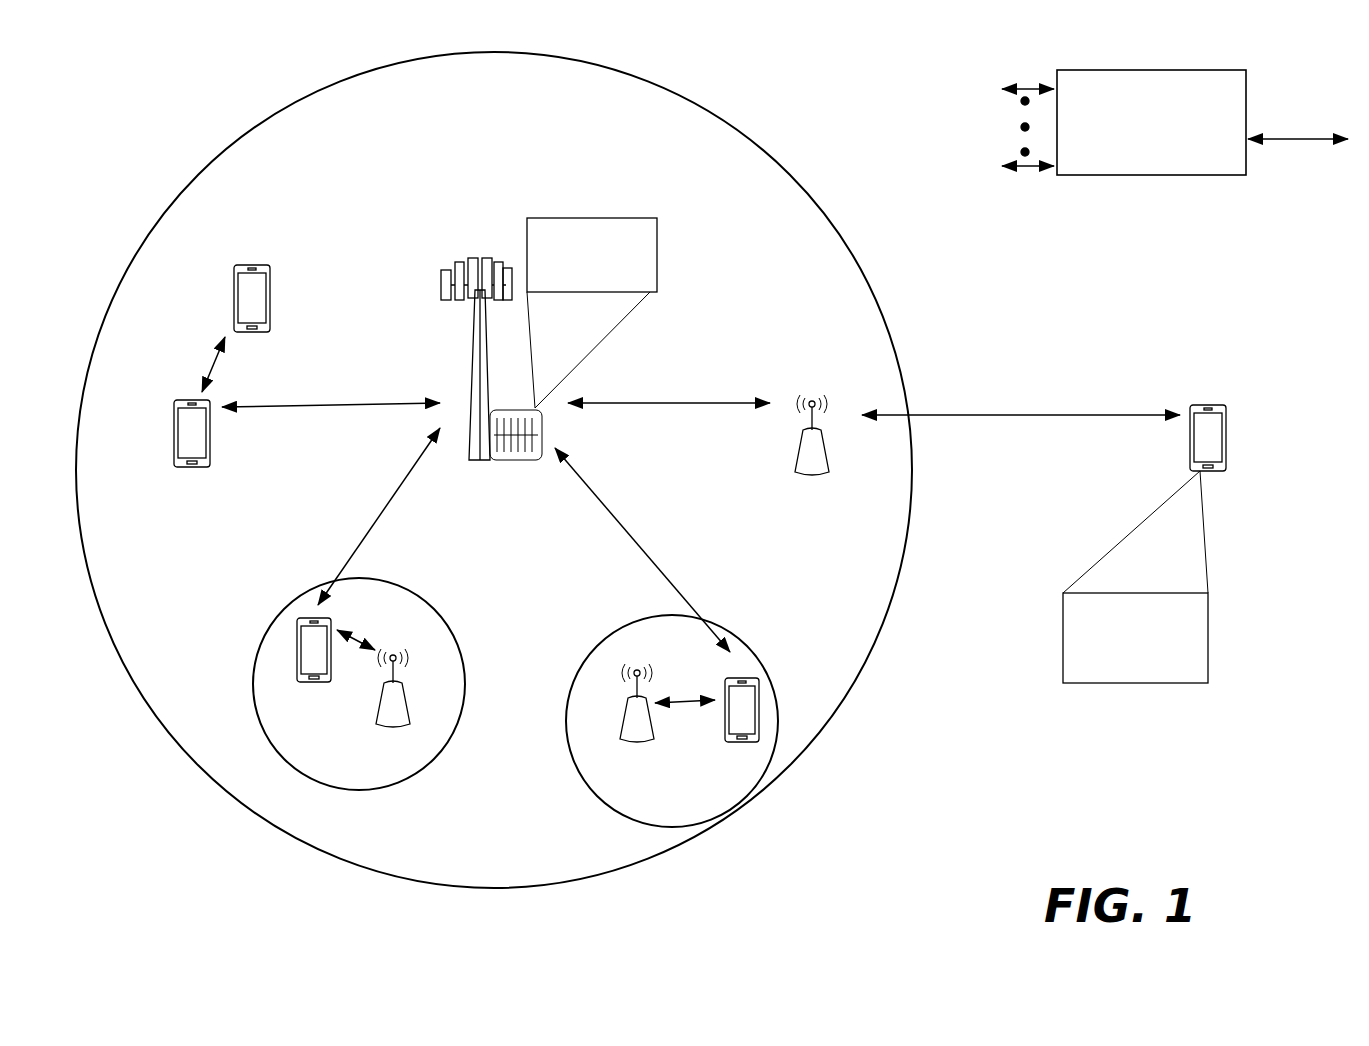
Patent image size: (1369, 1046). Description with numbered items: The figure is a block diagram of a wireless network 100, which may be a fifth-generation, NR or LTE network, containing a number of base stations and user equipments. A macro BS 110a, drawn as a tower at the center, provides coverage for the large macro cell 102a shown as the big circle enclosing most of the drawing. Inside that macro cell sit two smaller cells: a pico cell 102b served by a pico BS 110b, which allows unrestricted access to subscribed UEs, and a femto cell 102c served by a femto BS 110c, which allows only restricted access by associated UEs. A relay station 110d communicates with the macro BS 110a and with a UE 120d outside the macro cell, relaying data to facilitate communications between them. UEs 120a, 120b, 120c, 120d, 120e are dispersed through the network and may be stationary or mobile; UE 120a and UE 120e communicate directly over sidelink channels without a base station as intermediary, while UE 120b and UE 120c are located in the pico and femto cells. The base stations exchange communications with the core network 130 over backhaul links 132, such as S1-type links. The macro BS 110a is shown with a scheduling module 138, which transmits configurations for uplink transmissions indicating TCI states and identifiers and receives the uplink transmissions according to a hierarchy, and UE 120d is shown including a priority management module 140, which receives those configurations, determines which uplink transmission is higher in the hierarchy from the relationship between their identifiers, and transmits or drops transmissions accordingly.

The wireless network 100 is at (152, 95).
The macro cell 102a is at (772, 152).
The pico cell 102b is at (449, 620).
The femto cell 102c is at (612, 632).
The macro BS 110a is at (484, 252).
The pico BS 110b is at (413, 708).
The femto BS 110c is at (620, 723).
The relay station 110d is at (812, 398).
The UE 120a is at (176, 430).
The UE 120b is at (300, 684).
The UE 120c is at (726, 745).
The UE 120d is at (1222, 473).
The UE 120e is at (233, 288).
The core network 130 is at (1126, 68).
The backhaul links 132 is at (1026, 84).
The scheduling module 138 is at (660, 240).
The priority management module 140 is at (1143, 684).